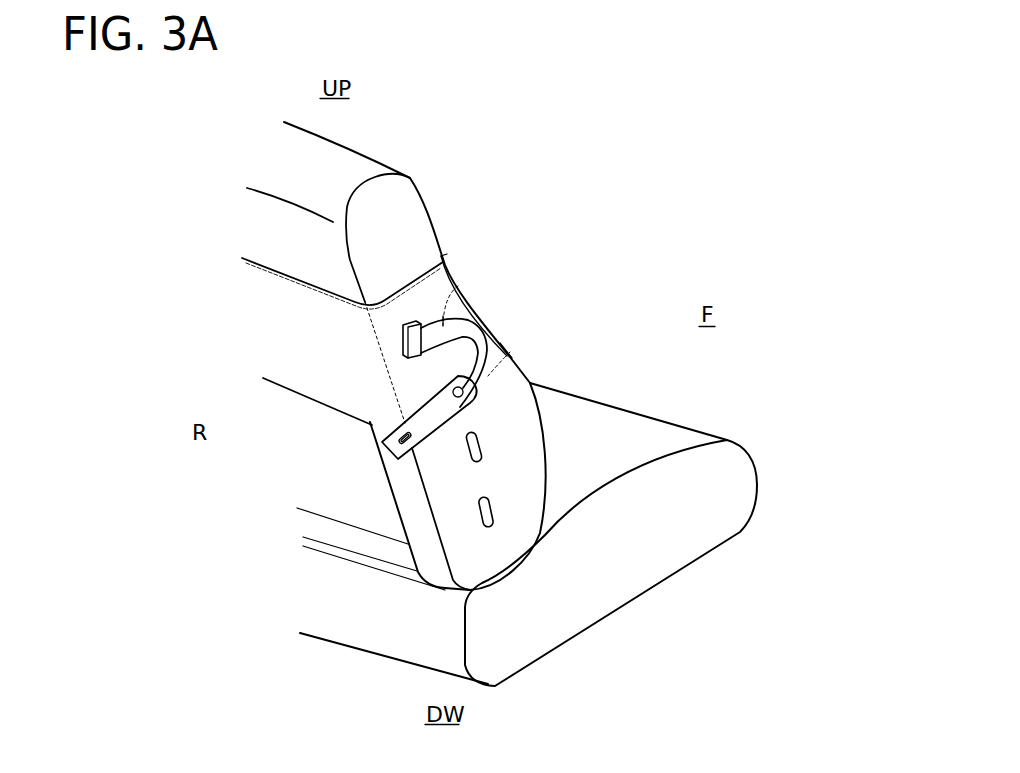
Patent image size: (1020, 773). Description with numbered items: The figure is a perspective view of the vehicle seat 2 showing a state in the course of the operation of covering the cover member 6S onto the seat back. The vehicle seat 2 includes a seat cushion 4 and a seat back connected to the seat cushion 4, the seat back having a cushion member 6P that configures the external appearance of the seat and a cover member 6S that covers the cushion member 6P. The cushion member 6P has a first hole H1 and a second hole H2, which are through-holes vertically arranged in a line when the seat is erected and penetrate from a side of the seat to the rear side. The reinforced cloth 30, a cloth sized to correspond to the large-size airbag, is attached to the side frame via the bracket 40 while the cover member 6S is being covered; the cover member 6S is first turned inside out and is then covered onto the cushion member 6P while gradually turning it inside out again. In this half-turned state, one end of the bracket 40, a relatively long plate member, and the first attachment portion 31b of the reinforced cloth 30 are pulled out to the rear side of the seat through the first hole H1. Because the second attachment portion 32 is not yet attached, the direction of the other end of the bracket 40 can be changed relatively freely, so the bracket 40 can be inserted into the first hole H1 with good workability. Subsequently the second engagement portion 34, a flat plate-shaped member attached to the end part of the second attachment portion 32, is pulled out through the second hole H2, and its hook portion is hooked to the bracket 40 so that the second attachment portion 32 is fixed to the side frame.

The vehicle seat 2 is at (372, 121).
The cover member 6S is at (347, 160).
The cushion member 6P is at (527, 463).
The reinforced cloth 30 is at (488, 318).
The first attachment portion 31b is at (513, 348).
The second attachment portion 32 is at (458, 287).
The second engagement portion 34 is at (403, 357).
The bracket 40 is at (430, 402).
The first hole H1 is at (470, 448).
The second hole H2 is at (480, 509).
The seat cushion 4 is at (720, 485).